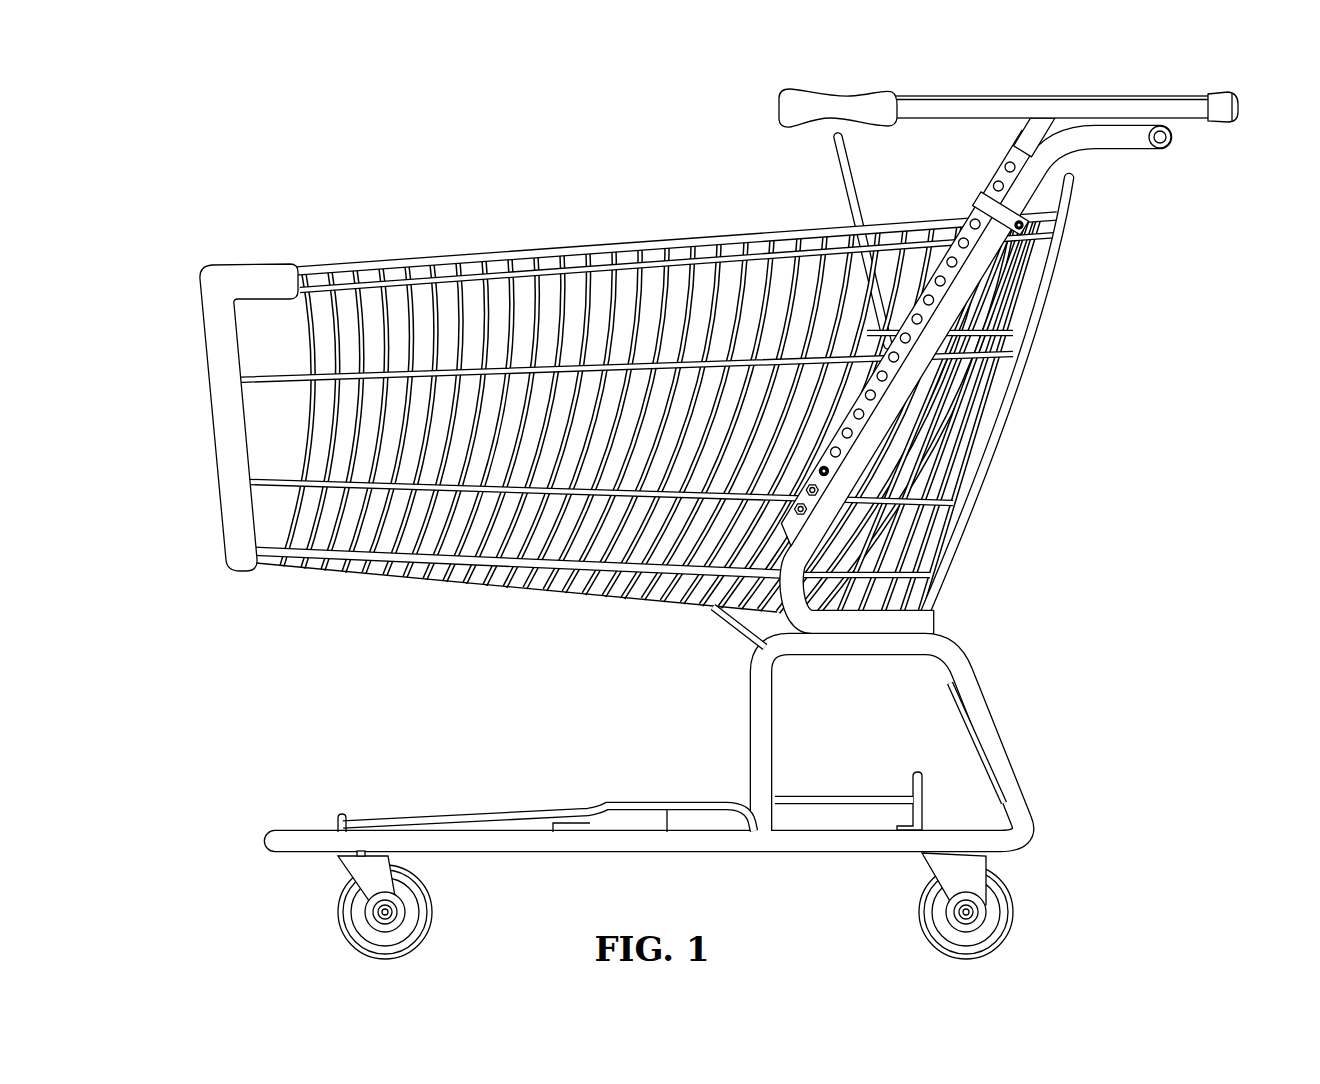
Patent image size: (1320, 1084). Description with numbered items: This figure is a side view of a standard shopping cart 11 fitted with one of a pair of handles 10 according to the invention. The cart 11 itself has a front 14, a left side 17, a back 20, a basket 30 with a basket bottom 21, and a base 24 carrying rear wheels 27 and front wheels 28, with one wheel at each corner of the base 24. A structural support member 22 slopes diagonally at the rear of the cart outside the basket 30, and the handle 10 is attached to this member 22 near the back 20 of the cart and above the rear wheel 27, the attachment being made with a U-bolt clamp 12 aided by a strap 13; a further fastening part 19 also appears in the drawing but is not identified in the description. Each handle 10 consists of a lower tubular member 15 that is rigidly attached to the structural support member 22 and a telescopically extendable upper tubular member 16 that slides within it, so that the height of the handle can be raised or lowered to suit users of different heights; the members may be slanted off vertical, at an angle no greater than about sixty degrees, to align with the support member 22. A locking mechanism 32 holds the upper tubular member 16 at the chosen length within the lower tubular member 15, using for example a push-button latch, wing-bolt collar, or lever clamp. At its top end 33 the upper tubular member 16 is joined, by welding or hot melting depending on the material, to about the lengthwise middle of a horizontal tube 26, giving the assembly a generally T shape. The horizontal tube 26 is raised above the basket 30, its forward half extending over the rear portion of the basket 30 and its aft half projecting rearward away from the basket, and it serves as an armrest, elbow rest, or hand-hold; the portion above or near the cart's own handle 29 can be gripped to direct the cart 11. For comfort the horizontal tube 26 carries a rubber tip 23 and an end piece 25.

The handle 10 is at (1142, 80).
The shopping cart 11 is at (208, 242).
The U-bolt clamp 12 is at (815, 492).
The strap 13 is at (980, 202).
The front 14 is at (208, 383).
The lower tubular member 15 is at (878, 388).
The extendable upper tubular member 16 is at (1033, 133).
The left side 17 is at (437, 524).
The bolt 19 is at (838, 455).
The back 20 is at (1038, 288).
The basket bottom 21 is at (580, 598).
The structural support member 22 is at (930, 344).
The rubber tip 23 is at (1225, 94).
The base 24 is at (566, 810).
The end piece 25 is at (812, 92).
The horizontal tube 26 is at (970, 97).
The rear wheel 27 is at (1020, 906).
The front wheel 28 is at (340, 906).
The handle of the cart 29 is at (1162, 140).
The basket 30 is at (584, 243).
The locking mechanism 32 is at (826, 473).
The top end 33 is at (1045, 116).